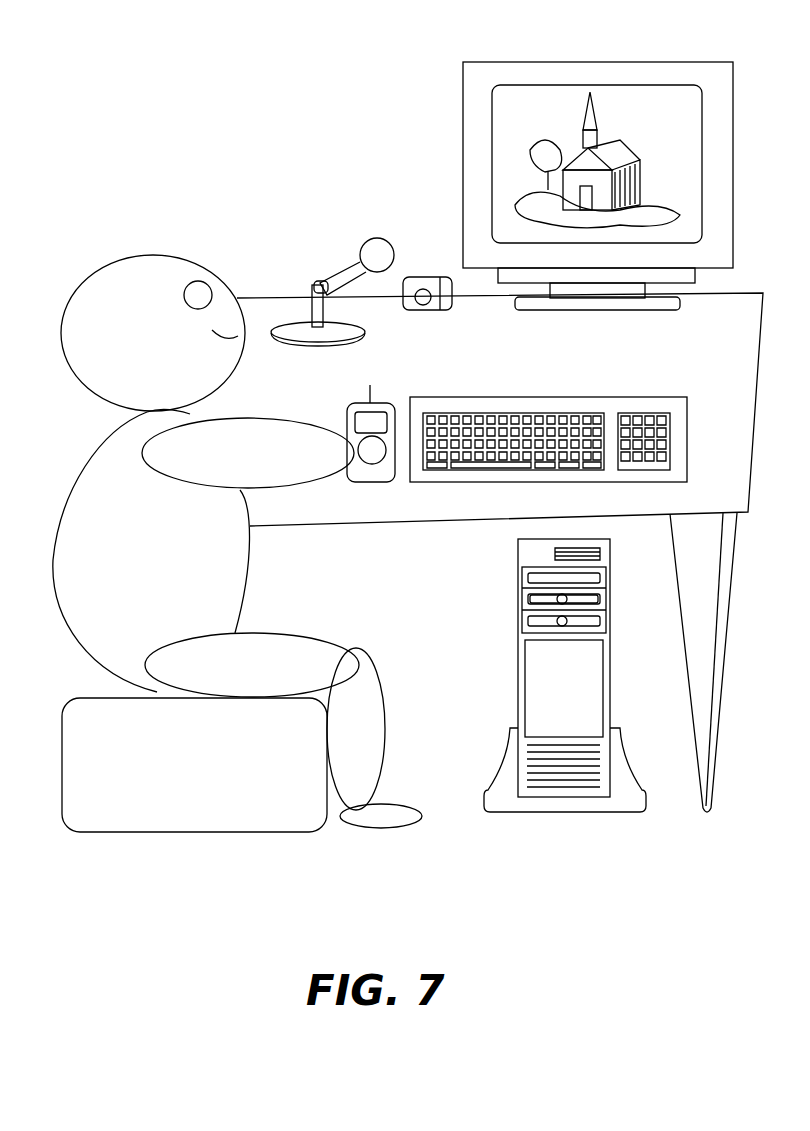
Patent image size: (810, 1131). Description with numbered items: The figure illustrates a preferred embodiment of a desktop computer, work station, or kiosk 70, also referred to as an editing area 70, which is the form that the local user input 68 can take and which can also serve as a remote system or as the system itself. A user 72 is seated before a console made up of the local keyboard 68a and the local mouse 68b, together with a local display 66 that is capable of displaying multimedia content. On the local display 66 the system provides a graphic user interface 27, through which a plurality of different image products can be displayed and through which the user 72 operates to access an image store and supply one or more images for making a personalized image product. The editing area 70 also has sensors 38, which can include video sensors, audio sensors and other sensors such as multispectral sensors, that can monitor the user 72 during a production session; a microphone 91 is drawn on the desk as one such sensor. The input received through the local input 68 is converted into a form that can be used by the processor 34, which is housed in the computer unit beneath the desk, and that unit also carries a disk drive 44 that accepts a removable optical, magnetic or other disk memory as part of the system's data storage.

The editing area 70 is at (203, 118).
The user 72 is at (66, 284).
The local input 68 is at (384, 199).
The microphone 91 is at (388, 248).
The sensors 38 is at (436, 277).
The local display 66 is at (576, 62).
The graphic user interface 27 is at (672, 85).
The local keyboard 68a is at (500, 482).
The local mouse 68b is at (358, 482).
The processor 34 is at (610, 565).
The disk drive 44 is at (518, 600).